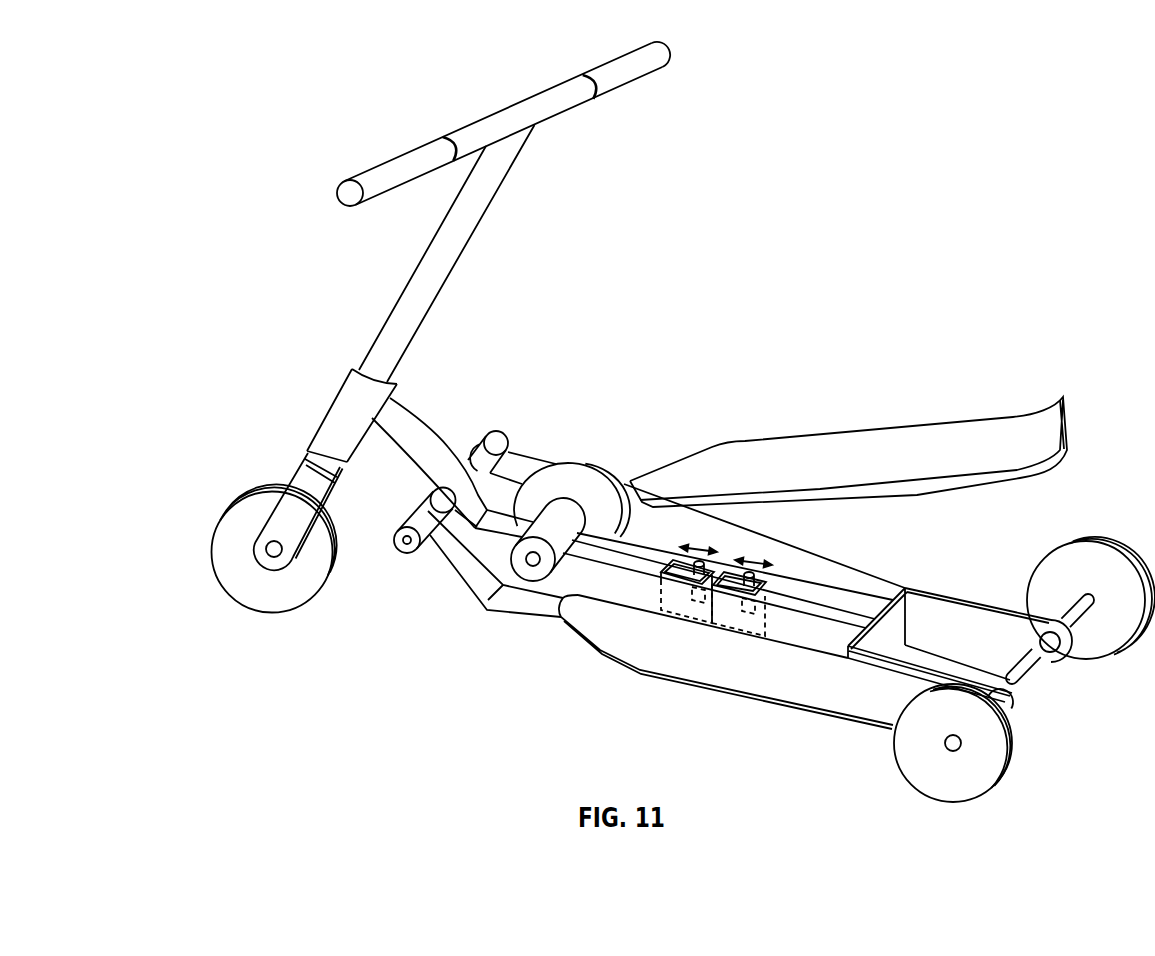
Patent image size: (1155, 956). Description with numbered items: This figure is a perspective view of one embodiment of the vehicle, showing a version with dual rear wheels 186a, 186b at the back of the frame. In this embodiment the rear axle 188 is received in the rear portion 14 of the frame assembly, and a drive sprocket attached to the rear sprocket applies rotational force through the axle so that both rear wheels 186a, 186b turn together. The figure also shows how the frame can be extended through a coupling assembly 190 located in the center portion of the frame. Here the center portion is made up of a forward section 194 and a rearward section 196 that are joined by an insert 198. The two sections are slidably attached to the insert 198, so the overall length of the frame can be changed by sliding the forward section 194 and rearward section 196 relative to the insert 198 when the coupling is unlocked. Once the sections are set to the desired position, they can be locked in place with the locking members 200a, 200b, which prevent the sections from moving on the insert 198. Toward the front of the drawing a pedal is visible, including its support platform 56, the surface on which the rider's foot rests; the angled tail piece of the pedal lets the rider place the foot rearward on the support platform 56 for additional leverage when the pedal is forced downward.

The rear portion 14 is at (962, 615).
The support platform 56 is at (952, 438).
The rear wheel 186a is at (1108, 643).
The rear wheel 186b is at (945, 777).
The rear axle 188 is at (1030, 673).
The coupling assembly 190 is at (683, 637).
The forward section 194 is at (632, 590).
The rearward section 196 is at (823, 632).
The insert 198 is at (737, 618).
The locking member 200a is at (698, 562).
The locking member 200b is at (732, 572).